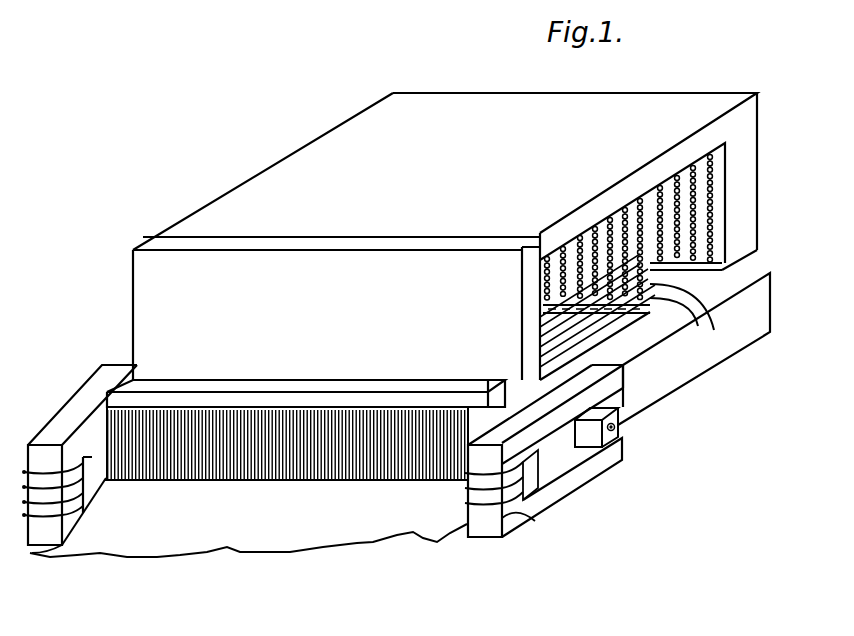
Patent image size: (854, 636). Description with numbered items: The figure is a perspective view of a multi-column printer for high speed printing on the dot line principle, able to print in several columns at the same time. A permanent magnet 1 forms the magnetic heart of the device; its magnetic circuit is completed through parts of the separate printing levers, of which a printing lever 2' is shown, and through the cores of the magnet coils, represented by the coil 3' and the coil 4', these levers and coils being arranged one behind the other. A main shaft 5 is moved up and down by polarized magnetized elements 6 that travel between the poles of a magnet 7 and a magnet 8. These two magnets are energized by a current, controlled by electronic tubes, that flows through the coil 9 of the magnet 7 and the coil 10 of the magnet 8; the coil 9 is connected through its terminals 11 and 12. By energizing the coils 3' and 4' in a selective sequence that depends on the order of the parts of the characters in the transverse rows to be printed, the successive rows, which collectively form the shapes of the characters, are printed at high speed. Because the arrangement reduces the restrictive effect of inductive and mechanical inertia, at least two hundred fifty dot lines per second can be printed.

The permanent magnet 1 is at (162, 332).
The printing lever 2' is at (694, 349).
The coil 3' is at (670, 227).
The coil 4' is at (631, 310).
The main shaft 5 is at (616, 426).
The polarized magnetized element 6 is at (613, 437).
The magnet 7 is at (603, 457).
The magnet 8 is at (110, 373).
The coil 9 is at (490, 503).
The coil 10 is at (53, 507).
The terminal 11 is at (545, 460).
The terminal 12 is at (535, 521).